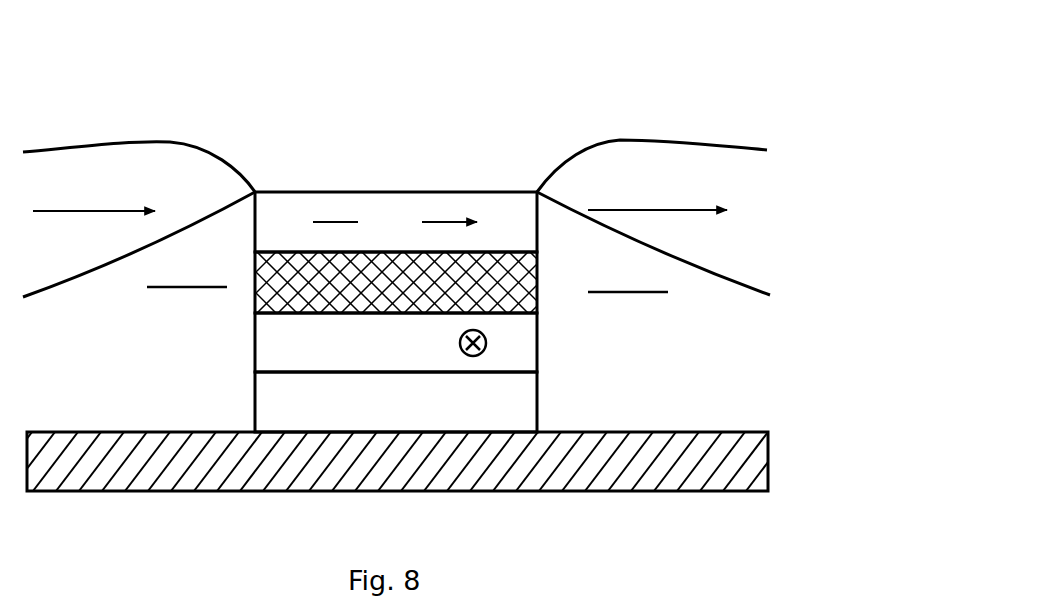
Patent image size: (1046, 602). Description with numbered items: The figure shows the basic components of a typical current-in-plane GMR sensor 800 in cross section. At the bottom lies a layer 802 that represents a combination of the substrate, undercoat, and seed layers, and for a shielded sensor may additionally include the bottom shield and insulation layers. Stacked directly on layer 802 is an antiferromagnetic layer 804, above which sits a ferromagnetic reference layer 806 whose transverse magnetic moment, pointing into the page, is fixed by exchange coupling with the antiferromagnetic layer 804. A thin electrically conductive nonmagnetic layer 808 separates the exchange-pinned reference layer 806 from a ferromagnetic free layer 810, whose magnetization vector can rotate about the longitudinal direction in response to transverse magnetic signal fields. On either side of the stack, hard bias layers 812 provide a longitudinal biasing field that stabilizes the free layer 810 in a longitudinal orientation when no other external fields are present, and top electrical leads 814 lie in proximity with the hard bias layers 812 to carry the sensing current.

The current-in-plane GMR sensor 800 is at (825, 155).
The substrate, undercoat and seed layer 802 is at (395, 461).
The antiferromagnetic layer 804 is at (396, 402).
The ferromagnetic reference layer 806 is at (396, 342).
The electrically conductive nonmagnetic layer 808 is at (392, 282).
The ferromagnetic free layer 810 is at (396, 222).
The hard bias layer 812 is at (407, 311).
The top electrical lead 814 is at (392, 194).